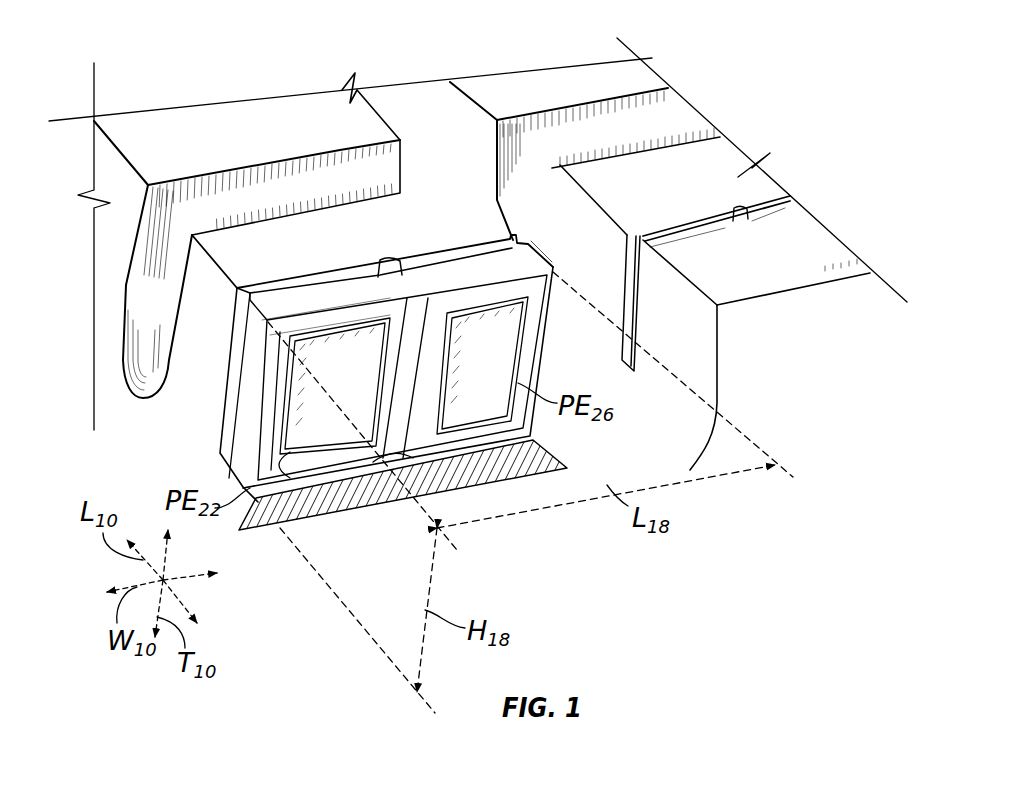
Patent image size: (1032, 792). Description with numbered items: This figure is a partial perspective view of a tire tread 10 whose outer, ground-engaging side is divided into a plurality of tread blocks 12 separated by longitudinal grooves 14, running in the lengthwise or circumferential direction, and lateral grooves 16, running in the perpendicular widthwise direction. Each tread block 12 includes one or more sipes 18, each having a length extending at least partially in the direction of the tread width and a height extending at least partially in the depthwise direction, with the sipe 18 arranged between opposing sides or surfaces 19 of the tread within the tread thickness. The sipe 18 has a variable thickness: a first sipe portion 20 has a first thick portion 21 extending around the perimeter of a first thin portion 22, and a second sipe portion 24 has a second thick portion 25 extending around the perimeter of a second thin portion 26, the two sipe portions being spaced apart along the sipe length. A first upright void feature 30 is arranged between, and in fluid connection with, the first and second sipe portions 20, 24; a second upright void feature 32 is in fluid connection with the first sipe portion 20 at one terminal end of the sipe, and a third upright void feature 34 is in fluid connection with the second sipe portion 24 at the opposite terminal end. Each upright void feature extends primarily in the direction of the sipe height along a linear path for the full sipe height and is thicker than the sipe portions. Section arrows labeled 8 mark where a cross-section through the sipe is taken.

The section line 8- 8 is at (760, 263).
The tire tread 10 is at (810, 57).
The tread blocks 12 is at (190, 150).
The longitudinal grooves 14 is at (696, 342).
The lateral grooves 16 is at (135, 312).
The sipe 18 is at (305, 318).
The opposing sides or surfaces of the tread 19 is at (455, 295).
The first sipe portion 20 is at (350, 472).
The first thick portion 21 is at (333, 325).
The first thin portion 22 is at (327, 433).
The second sipe portion 24 is at (490, 450).
The second thick portion 25 is at (507, 295).
The second thin portion 26 is at (483, 404).
The first upright void feature 30 is at (422, 295).
The second upright void feature 32 is at (257, 435).
The third upright void feature 34 is at (553, 268).